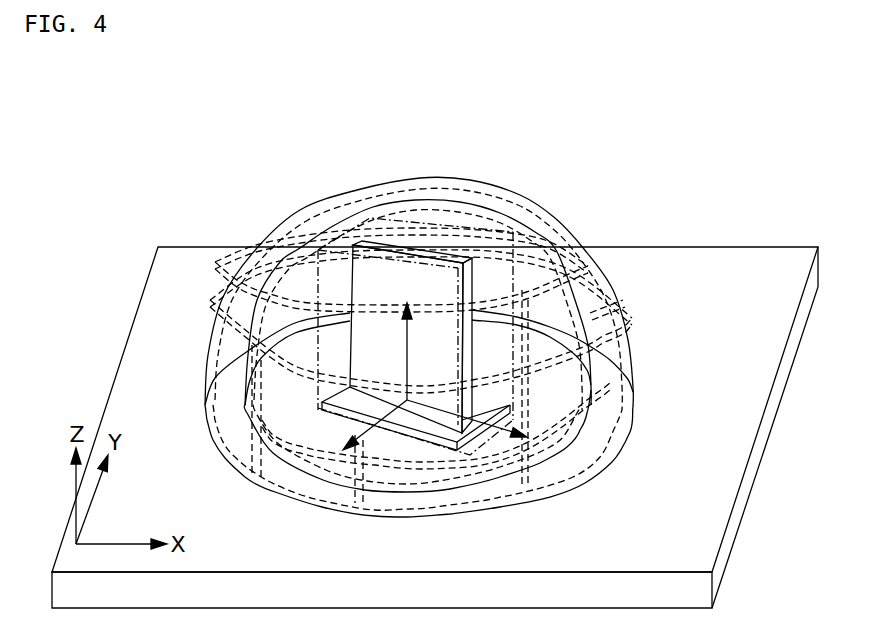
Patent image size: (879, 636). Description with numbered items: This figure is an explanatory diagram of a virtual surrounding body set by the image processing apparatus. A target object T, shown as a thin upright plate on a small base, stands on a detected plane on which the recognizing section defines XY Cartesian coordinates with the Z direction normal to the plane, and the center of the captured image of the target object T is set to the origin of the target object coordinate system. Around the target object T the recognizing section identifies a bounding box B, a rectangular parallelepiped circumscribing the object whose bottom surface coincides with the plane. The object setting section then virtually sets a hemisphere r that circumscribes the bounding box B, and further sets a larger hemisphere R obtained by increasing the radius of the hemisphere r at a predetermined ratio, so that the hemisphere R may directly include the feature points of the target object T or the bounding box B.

The target object T is at (412, 248).
The bounding box B is at (512, 212).
The hemisphere r is at (557, 262).
The hemisphere R is at (615, 285).